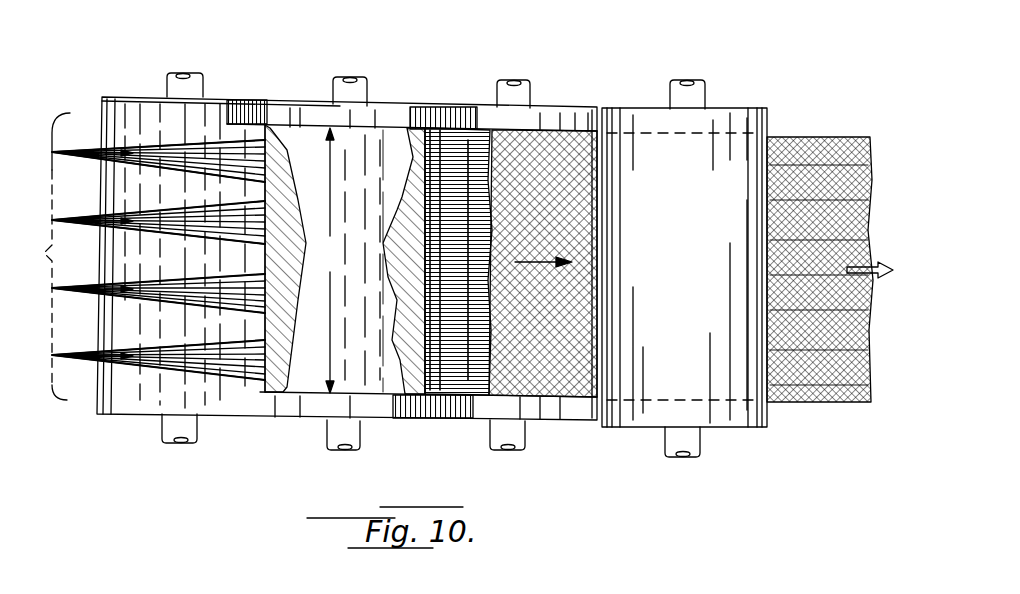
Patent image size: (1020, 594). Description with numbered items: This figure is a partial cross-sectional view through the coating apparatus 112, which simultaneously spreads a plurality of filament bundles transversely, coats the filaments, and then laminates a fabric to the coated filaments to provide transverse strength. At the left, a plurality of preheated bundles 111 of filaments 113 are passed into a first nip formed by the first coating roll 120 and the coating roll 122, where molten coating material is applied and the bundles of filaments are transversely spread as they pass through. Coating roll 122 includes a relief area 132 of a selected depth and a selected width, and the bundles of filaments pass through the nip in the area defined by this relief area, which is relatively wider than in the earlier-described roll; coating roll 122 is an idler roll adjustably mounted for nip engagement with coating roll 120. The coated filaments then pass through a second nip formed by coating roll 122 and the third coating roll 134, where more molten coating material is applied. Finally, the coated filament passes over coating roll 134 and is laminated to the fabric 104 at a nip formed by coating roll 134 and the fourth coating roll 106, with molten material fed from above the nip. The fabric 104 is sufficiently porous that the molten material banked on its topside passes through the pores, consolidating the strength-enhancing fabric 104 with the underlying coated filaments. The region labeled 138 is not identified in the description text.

The fabric 104 is at (553, 135).
The fourth coating roll 106 is at (739, 104).
The bundles of filaments 111 is at (199, 174).
The coating apparatus 112 is at (295, 53).
The filaments 113 is at (267, 173).
The first coating roll 120 is at (143, 90).
The coating roll 122 is at (400, 100).
The relief area 132 is at (303, 390).
The third coating roll 134 is at (472, 97).
The retaining flanges 138 is at (289, 105).